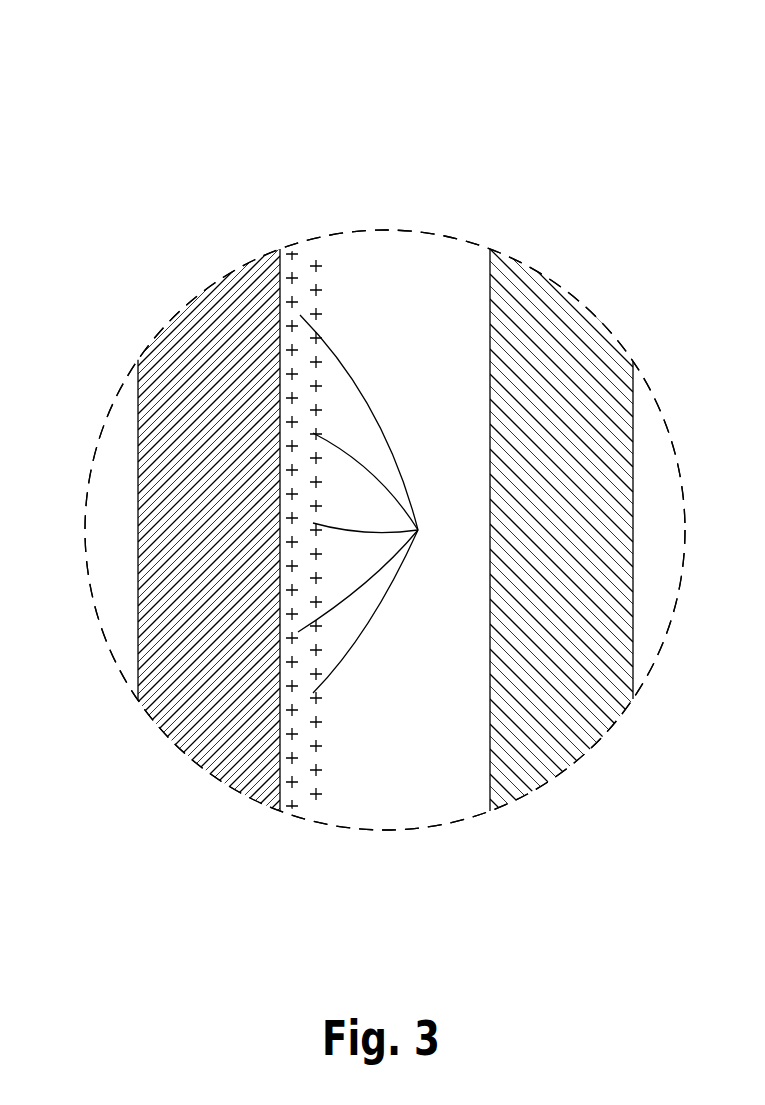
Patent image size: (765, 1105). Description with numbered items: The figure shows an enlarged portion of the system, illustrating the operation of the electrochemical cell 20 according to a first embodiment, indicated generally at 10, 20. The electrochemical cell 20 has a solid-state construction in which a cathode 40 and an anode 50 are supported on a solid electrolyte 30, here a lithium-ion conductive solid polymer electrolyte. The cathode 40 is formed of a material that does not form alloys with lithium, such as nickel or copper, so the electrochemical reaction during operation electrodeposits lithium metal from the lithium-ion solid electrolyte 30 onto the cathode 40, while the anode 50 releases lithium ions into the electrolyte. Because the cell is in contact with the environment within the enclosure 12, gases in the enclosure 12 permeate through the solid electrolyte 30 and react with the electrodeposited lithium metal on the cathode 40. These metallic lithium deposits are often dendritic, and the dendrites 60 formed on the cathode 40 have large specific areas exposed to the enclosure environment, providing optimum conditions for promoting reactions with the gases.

The sensor arrangement 10 is at (155, 117).
The electrochemical cell 20 is at (385, 530).
The enclosure 12 is at (363, 785).
The solid electrolyte 30 is at (447, 268).
The cathode 40 is at (193, 347).
The anode 50 is at (543, 312).
The dendrites 60 is at (383, 504).